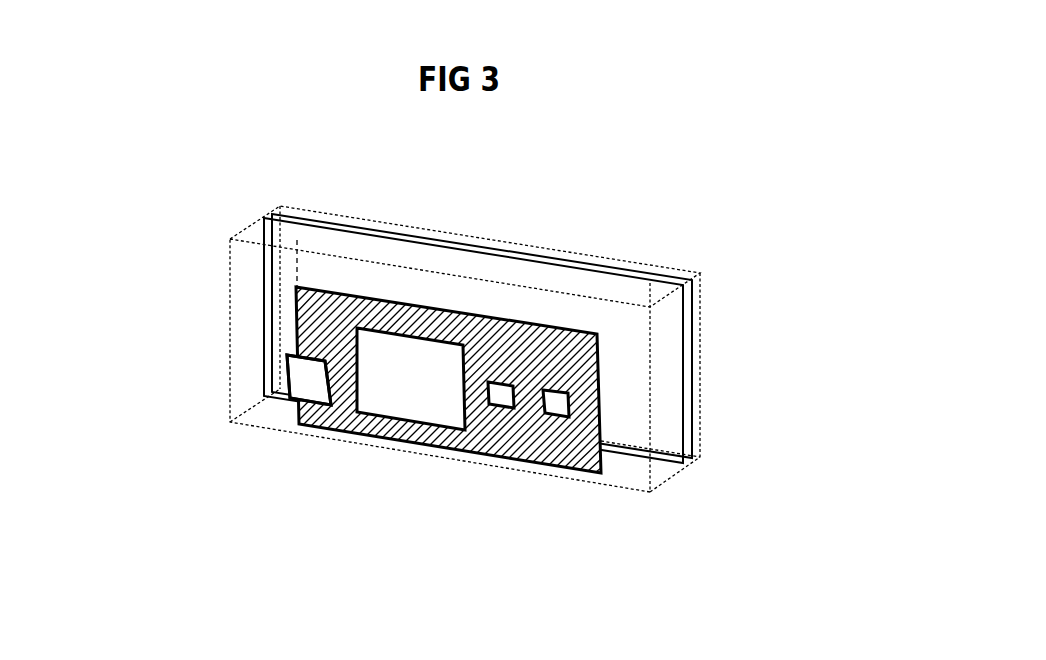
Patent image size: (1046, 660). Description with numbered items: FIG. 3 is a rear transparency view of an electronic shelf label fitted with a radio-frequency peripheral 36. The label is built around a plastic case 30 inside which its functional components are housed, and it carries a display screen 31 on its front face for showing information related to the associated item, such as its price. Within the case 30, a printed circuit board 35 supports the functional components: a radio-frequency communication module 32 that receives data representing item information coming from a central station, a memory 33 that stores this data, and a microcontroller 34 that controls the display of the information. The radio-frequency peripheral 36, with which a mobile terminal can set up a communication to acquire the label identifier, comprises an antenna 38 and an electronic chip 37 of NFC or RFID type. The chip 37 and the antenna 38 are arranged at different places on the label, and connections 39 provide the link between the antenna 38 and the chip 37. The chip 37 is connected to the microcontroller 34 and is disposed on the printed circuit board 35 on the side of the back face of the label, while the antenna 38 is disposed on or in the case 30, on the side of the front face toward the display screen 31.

The case 30 is at (230, 295).
The display screen 31 is at (632, 296).
The radio-frequency communication module 32 is at (561, 413).
The memory 33 is at (512, 408).
The microcontroller 34 is at (410, 405).
The printed circuit board 35 is at (485, 427).
The radio-frequency peripheral 36 is at (246, 402).
The electronic chip 37 is at (306, 390).
The antenna 38 is at (348, 226).
The connections 39 is at (284, 392).